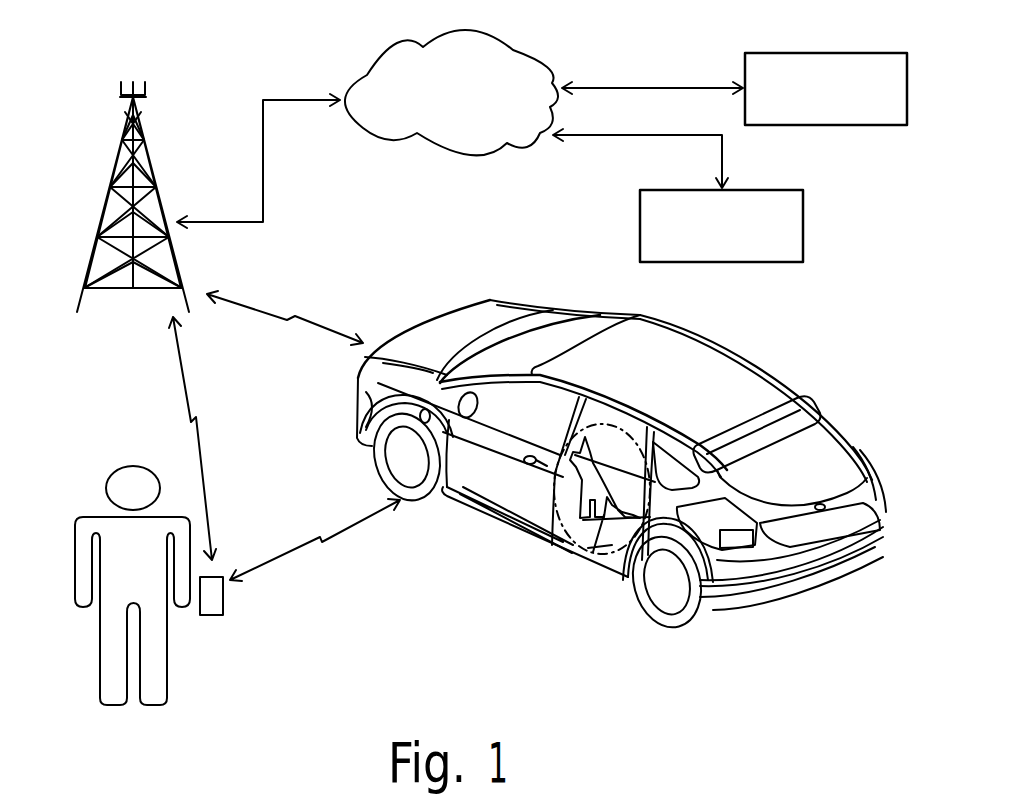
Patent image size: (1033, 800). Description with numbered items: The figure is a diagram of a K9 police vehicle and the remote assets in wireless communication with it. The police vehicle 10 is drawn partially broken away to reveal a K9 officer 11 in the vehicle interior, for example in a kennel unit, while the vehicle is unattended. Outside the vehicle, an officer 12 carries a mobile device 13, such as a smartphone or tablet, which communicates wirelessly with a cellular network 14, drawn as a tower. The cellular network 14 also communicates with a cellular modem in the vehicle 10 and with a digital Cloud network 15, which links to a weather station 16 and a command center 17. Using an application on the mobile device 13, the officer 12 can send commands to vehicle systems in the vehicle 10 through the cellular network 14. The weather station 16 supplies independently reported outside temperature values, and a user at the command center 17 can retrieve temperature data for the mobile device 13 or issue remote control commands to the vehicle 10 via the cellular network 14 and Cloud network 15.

The police vehicle 10 is at (811, 365).
The K9 officer 11 is at (605, 512).
The officer 12 is at (75, 538).
The mobile device 13 is at (223, 603).
The cellular network 14 is at (85, 176).
The Cloud network 15 is at (380, 48).
The weather station 16 is at (780, 53).
The command center 17 is at (640, 210).